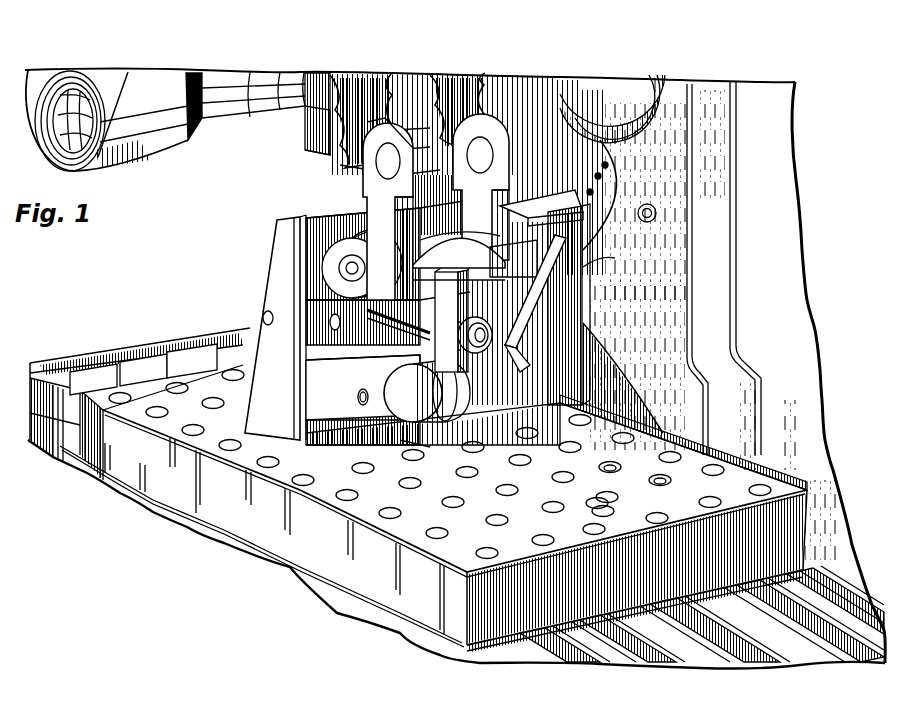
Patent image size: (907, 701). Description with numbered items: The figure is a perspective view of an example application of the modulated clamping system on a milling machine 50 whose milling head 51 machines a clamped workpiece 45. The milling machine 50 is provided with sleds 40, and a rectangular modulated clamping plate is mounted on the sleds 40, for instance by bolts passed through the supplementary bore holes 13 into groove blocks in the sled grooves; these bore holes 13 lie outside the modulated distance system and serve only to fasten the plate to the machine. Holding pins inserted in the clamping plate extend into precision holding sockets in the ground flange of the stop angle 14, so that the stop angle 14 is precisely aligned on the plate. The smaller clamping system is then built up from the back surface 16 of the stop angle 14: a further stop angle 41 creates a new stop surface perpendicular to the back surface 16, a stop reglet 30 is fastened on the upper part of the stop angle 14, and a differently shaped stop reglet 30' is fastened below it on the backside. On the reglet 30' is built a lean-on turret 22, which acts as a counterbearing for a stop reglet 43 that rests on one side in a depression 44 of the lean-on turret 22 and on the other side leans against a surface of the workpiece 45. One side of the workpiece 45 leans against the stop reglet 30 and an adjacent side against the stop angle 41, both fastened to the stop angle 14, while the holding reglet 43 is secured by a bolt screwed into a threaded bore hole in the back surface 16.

The bore holes 13 is at (618, 464).
The base angle 14 is at (258, 333).
The back surface 16 is at (300, 308).
The lean-on turret 22 is at (414, 443).
The stop reglet 30 is at (349, 250).
The stop reglet 30' is at (403, 400).
The sleds 40 is at (802, 612).
The stop angle 41 is at (590, 262).
The stop reglet 43 is at (415, 363).
The depression 44 is at (372, 332).
The workpiece 45 is at (520, 204).
The milling machine 50 is at (800, 270).
The milling head 51 is at (213, 125).